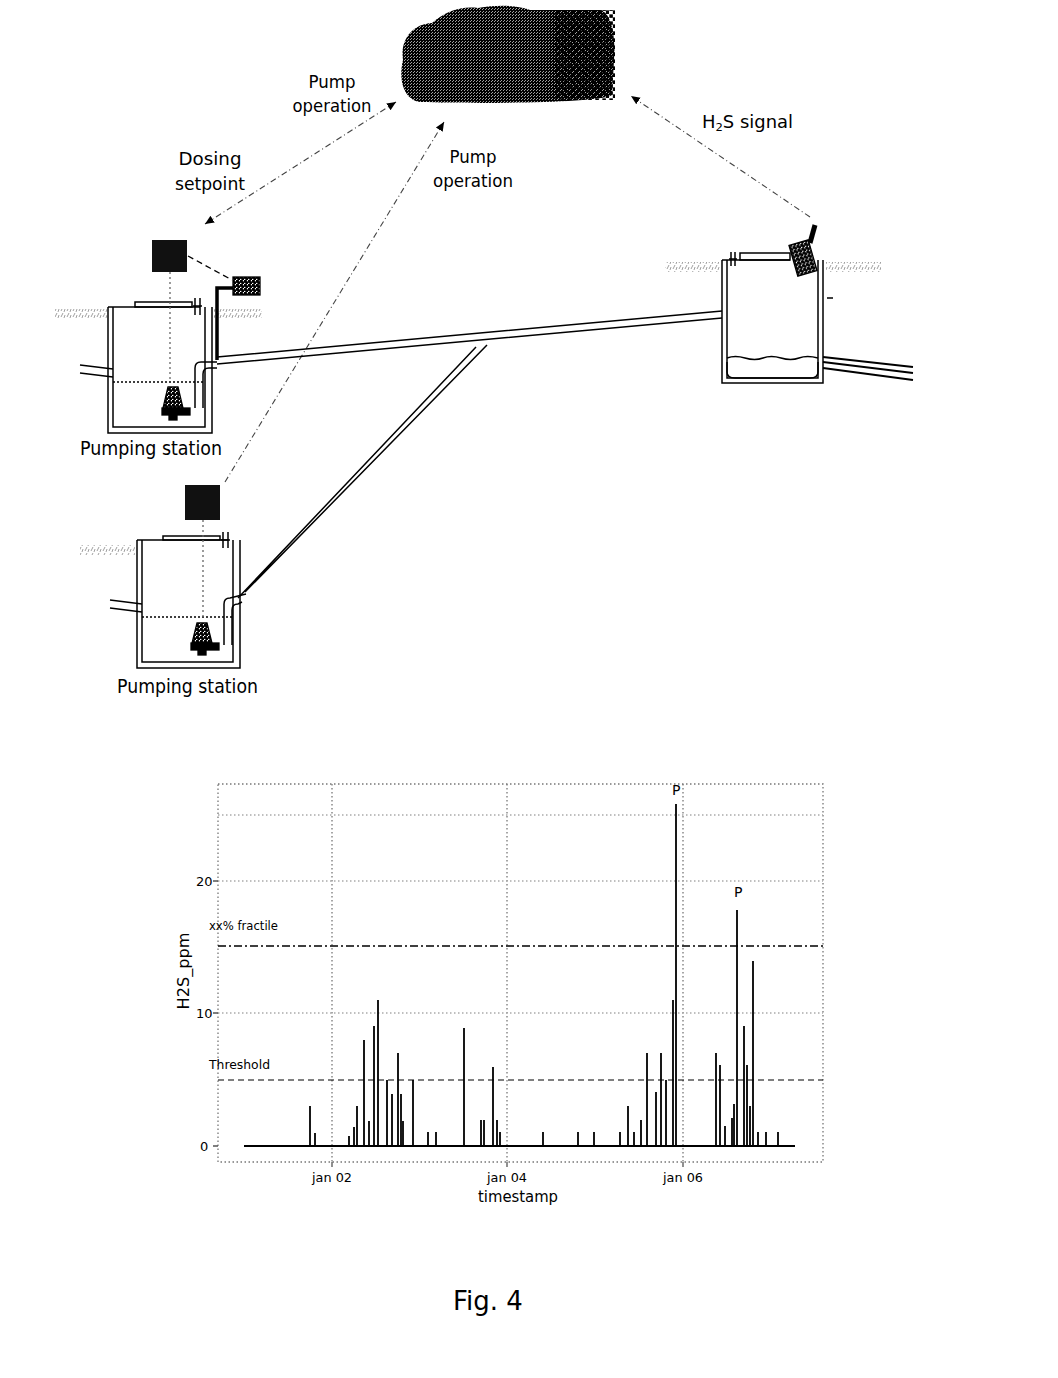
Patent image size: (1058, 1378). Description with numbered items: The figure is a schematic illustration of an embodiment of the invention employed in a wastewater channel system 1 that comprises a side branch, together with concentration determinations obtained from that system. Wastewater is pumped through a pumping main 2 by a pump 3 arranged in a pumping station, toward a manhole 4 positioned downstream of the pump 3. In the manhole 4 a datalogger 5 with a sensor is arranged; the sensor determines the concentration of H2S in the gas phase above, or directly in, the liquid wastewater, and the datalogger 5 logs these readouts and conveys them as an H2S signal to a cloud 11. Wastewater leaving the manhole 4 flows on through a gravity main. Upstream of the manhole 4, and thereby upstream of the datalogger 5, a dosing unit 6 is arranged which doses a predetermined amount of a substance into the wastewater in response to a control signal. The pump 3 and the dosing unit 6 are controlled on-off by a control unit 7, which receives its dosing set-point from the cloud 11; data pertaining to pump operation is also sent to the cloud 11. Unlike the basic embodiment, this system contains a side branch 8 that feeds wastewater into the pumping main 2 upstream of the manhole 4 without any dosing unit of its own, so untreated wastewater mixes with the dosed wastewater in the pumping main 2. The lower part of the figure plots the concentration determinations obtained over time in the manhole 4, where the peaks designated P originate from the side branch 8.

The wastewater channel system 1 is at (512, 419).
The pumping main 2 is at (340, 359).
The pump 3 is at (163, 397).
The manhole 4 is at (697, 404).
The datalogger 5 is at (828, 233).
The dosing unit 6 is at (250, 267).
The control unit 7 is at (151, 233).
The side branch 8 is at (343, 505).
The cloud 11 is at (417, 45).